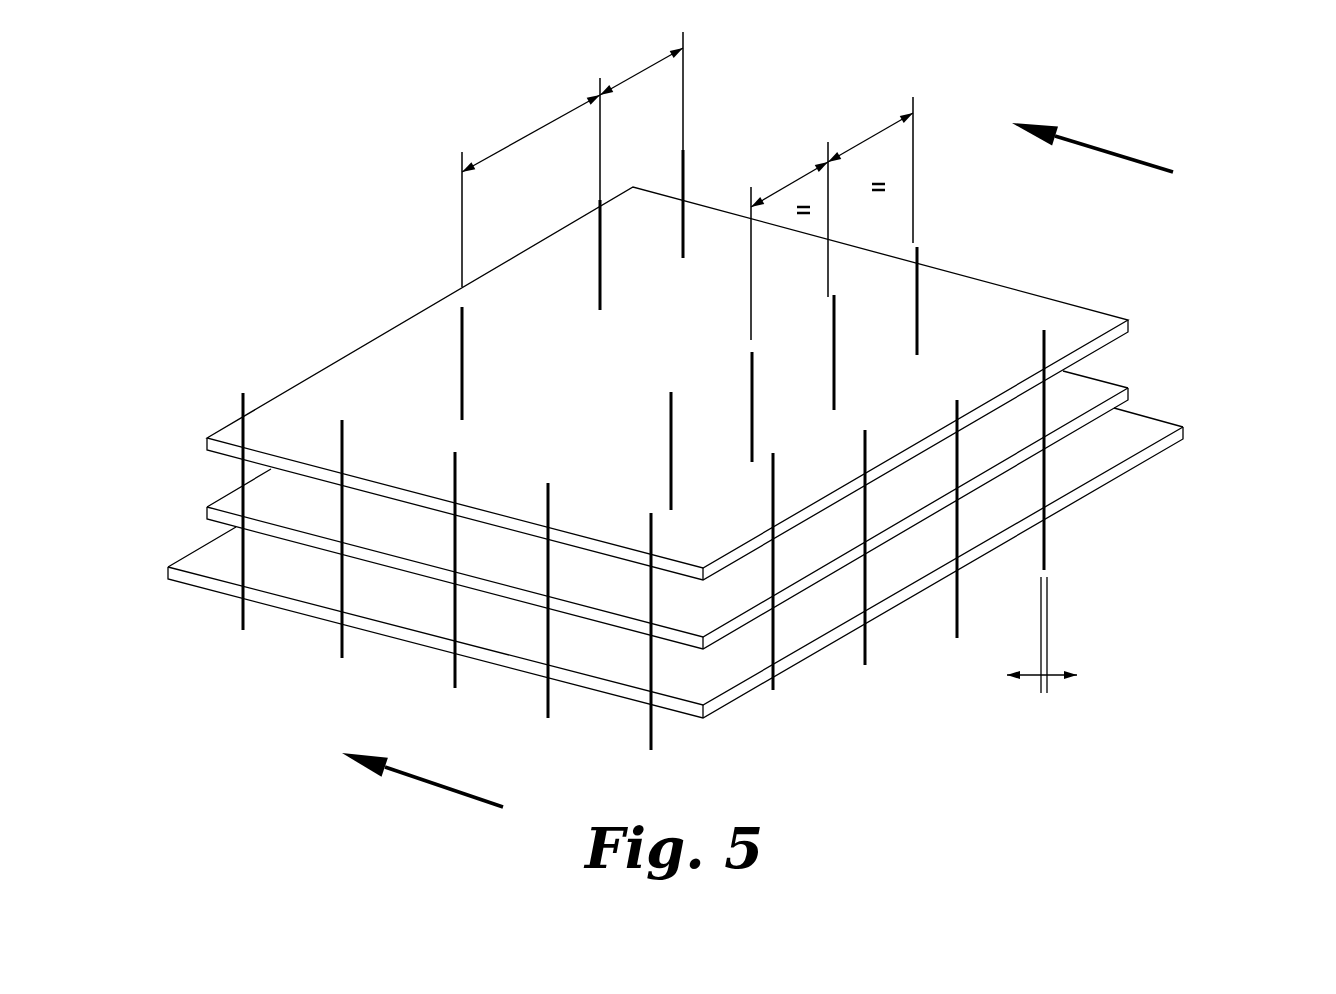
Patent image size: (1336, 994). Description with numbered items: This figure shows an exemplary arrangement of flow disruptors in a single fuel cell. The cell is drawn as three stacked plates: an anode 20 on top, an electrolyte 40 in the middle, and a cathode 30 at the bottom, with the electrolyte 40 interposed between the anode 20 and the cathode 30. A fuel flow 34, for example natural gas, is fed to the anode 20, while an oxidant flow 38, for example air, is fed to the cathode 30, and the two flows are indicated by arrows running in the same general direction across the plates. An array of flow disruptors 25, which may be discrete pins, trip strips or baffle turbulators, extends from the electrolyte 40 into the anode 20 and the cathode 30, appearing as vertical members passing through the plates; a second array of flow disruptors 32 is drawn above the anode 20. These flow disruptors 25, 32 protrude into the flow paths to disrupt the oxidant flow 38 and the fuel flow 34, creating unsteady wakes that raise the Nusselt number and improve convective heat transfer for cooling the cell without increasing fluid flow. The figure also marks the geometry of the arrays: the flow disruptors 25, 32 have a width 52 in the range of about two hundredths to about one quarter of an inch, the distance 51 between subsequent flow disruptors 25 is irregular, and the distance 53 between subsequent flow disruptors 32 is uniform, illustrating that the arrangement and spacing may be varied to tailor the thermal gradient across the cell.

The anode 20 is at (1127, 323).
The electrolyte 40 is at (1128, 388).
The cathode 30 is at (1183, 439).
The flow disruptors 25 is at (327, 613).
The second array of flow disruptors 32 is at (928, 253).
The fuel flow 34 is at (435, 779).
The oxidant flow 38 is at (1114, 137).
The distance between subsequent flow disruptors 51 is at (520, 137).
The width 52 is at (1080, 652).
The distance between subsequent flow disruptors 53 is at (840, 168).